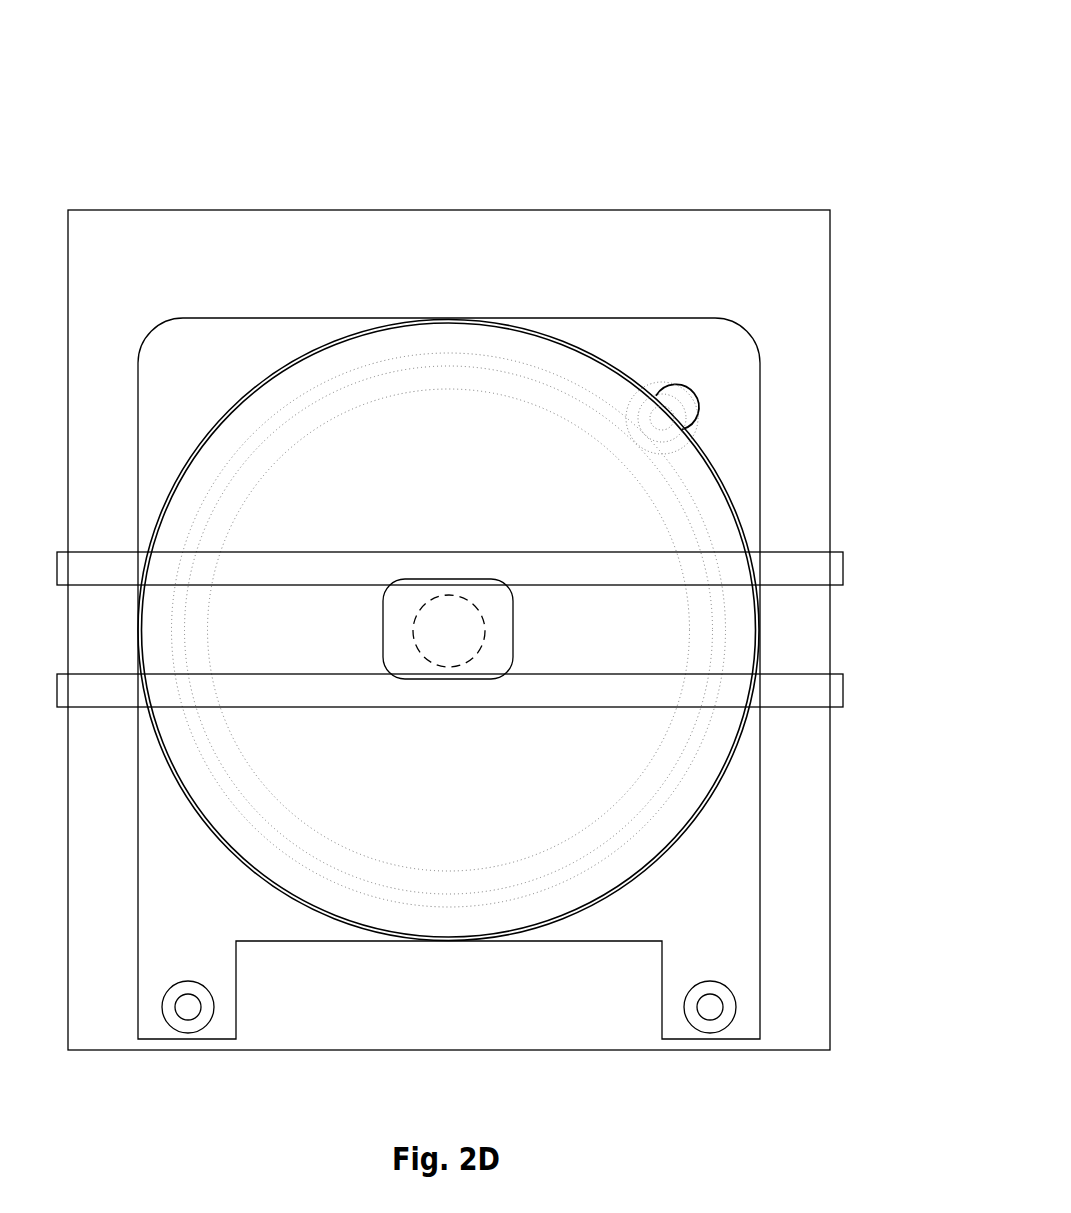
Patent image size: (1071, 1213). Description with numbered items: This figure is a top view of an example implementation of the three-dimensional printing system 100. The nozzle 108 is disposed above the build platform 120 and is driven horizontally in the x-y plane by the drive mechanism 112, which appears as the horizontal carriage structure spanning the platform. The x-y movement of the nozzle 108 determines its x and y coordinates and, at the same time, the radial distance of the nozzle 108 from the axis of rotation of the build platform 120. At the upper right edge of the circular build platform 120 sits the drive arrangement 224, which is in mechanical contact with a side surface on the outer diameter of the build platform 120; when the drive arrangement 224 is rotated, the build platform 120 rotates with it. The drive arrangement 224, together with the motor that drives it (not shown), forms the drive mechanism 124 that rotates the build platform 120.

The 3D printing system 100 is at (779, 38).
The nozzle 108 is at (443, 665).
The drive mechanism 112 is at (375, 572).
The build platform 120 is at (523, 847).
The drive mechanism 124 is at (765, 298).
The drive arrangement 224 is at (660, 395).